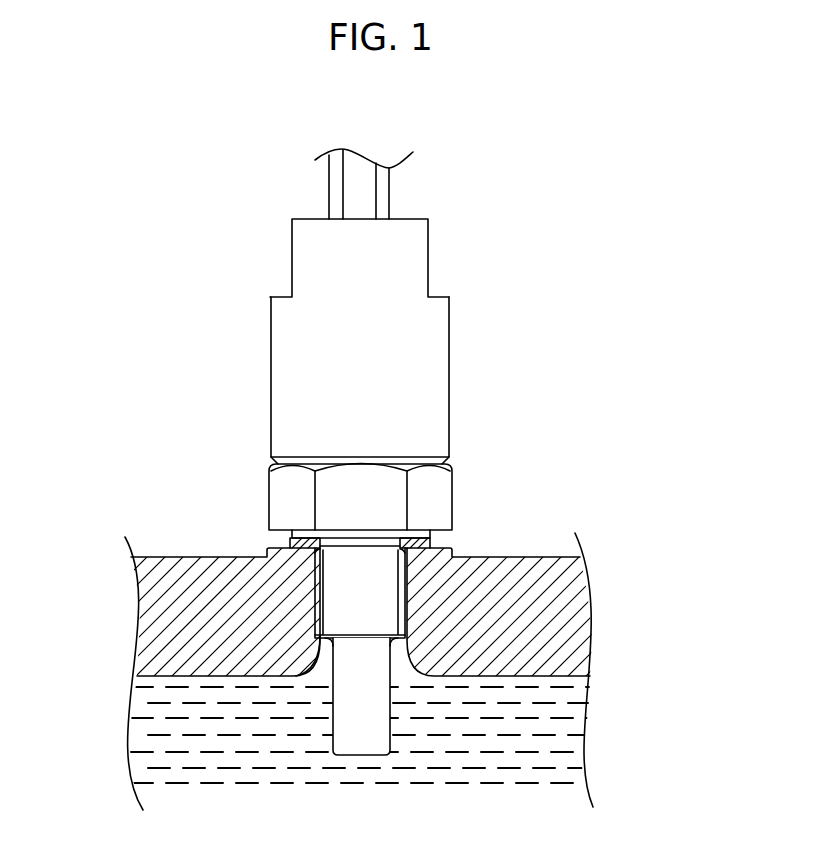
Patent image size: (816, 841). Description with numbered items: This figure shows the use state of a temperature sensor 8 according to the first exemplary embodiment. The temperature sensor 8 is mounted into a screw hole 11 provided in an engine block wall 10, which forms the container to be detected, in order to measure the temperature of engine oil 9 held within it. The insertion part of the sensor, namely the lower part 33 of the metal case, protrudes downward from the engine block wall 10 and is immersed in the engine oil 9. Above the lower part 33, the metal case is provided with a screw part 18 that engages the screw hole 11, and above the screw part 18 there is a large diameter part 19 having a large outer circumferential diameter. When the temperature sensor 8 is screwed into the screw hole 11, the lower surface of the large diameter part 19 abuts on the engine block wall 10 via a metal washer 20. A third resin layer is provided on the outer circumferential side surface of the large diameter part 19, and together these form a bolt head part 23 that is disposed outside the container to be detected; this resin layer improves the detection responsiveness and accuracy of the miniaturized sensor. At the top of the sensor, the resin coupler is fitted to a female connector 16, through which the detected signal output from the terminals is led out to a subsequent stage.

The temperature sensor 8 is at (467, 467).
The female connector 16 is at (302, 340).
The bolt head part 23 is at (433, 490).
The large diameter part 19 is at (435, 533).
The metal washer 20 is at (395, 538).
The screw part 18 is at (385, 597).
The engine block wall 10 is at (183, 613).
The screw hole 11 is at (315, 664).
The engine oil 9 is at (197, 727).
The lower part 33 is at (370, 718).